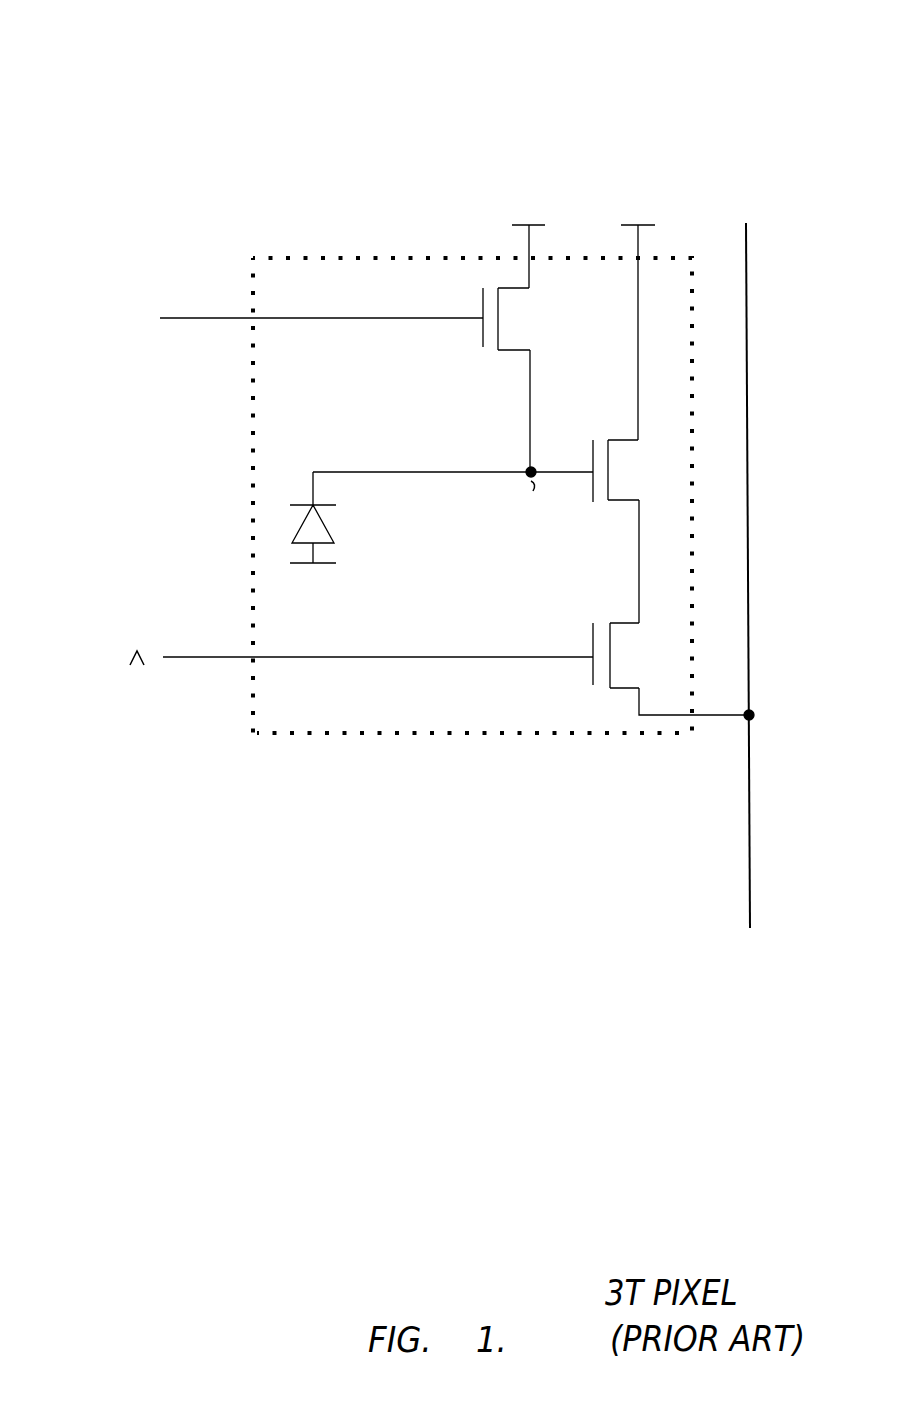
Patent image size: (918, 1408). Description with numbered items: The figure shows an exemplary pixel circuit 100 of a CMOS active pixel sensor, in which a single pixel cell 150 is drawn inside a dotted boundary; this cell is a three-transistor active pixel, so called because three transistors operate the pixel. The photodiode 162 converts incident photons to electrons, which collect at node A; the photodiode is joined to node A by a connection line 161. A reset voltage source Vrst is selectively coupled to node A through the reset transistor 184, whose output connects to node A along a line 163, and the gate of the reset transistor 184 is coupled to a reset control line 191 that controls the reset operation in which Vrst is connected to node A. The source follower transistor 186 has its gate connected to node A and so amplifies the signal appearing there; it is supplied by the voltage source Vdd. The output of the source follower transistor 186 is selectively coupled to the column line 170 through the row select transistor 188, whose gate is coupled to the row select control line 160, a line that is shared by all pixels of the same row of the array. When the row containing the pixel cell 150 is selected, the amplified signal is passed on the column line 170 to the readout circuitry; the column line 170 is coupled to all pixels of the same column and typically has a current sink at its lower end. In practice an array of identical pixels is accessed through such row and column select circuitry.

The circuit 100 is at (715, 43).
The pixel cell 150 is at (330, 729).
The row select control line 160 is at (461, 657).
The photodiode connection line to node A 161 is at (402, 470).
The photodiode 162 is at (334, 543).
The line from reset transistor to node A 163 is at (531, 420).
The column line 170 is at (748, 410).
The reset transistor 184 is at (510, 322).
The source follower transistor 186 is at (615, 476).
The row select transistor 188 is at (615, 659).
The reset control line 191 is at (294, 318).